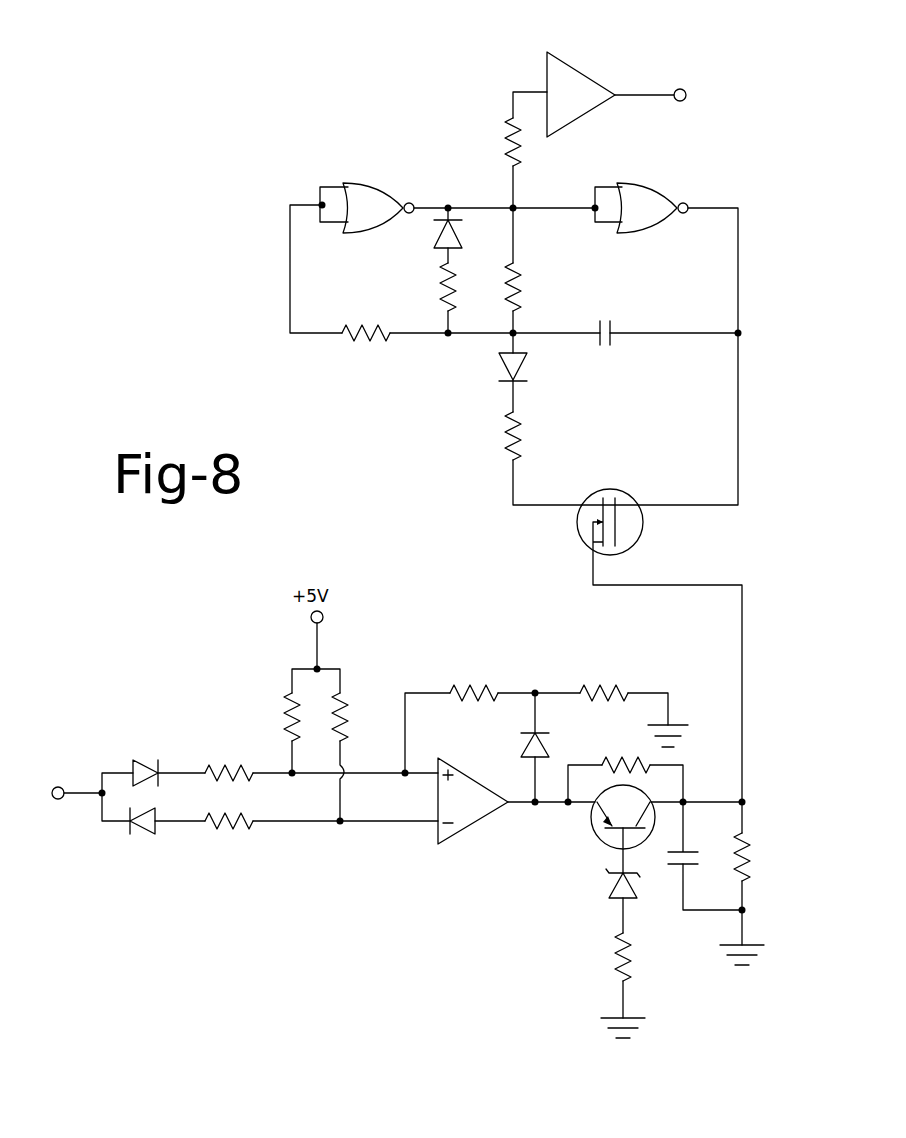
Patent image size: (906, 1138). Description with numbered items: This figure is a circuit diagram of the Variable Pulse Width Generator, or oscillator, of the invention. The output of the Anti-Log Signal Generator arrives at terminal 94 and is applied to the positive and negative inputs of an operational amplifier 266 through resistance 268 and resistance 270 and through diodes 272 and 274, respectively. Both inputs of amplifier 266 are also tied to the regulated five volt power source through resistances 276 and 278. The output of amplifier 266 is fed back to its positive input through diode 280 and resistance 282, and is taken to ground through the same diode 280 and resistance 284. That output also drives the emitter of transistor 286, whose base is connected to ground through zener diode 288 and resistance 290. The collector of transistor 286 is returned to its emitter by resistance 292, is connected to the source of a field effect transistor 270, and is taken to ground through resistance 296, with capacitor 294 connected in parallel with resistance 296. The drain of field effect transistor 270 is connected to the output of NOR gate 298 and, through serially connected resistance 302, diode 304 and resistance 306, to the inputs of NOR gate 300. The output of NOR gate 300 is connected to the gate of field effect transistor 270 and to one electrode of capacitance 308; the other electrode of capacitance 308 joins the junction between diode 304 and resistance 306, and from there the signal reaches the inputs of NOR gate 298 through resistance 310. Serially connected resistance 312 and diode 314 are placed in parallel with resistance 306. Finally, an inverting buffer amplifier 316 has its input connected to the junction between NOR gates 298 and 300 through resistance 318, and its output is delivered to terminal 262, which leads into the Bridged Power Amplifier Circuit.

The terminal 94 is at (63, 788).
The terminal 262 is at (717, 38).
The operational amplifier 266 is at (466, 828).
The resistance 268 is at (228, 768).
The resistance / field effect transistor 270 is at (642, 530).
The diode 272 is at (146, 758).
The diode 274 is at (146, 834).
The resistance 276 is at (287, 708).
The resistance 278 is at (347, 714).
The diode 280 is at (522, 752).
The resistance 282 is at (480, 688).
The resistance 284 is at (638, 632).
The transistor 286 is at (600, 840).
The zener diode 288 is at (612, 888).
The resistance 290 is at (618, 955).
The resistance 292 is at (627, 725).
The capacitor 294 is at (677, 868).
The resistance 296 is at (748, 876).
The NOR gate 298 is at (374, 183).
The NOR gate 300 is at (643, 182).
The resistance 302 is at (518, 433).
The diode 304 is at (499, 368).
The resistance 306 is at (522, 296).
The capacitance 308 is at (602, 347).
The resistance 310 is at (362, 337).
The resistance 312 is at (442, 290).
The diode 314 is at (433, 229).
The inverting buffer amplifier 316 is at (580, 66).
The resistance 318 is at (506, 150).